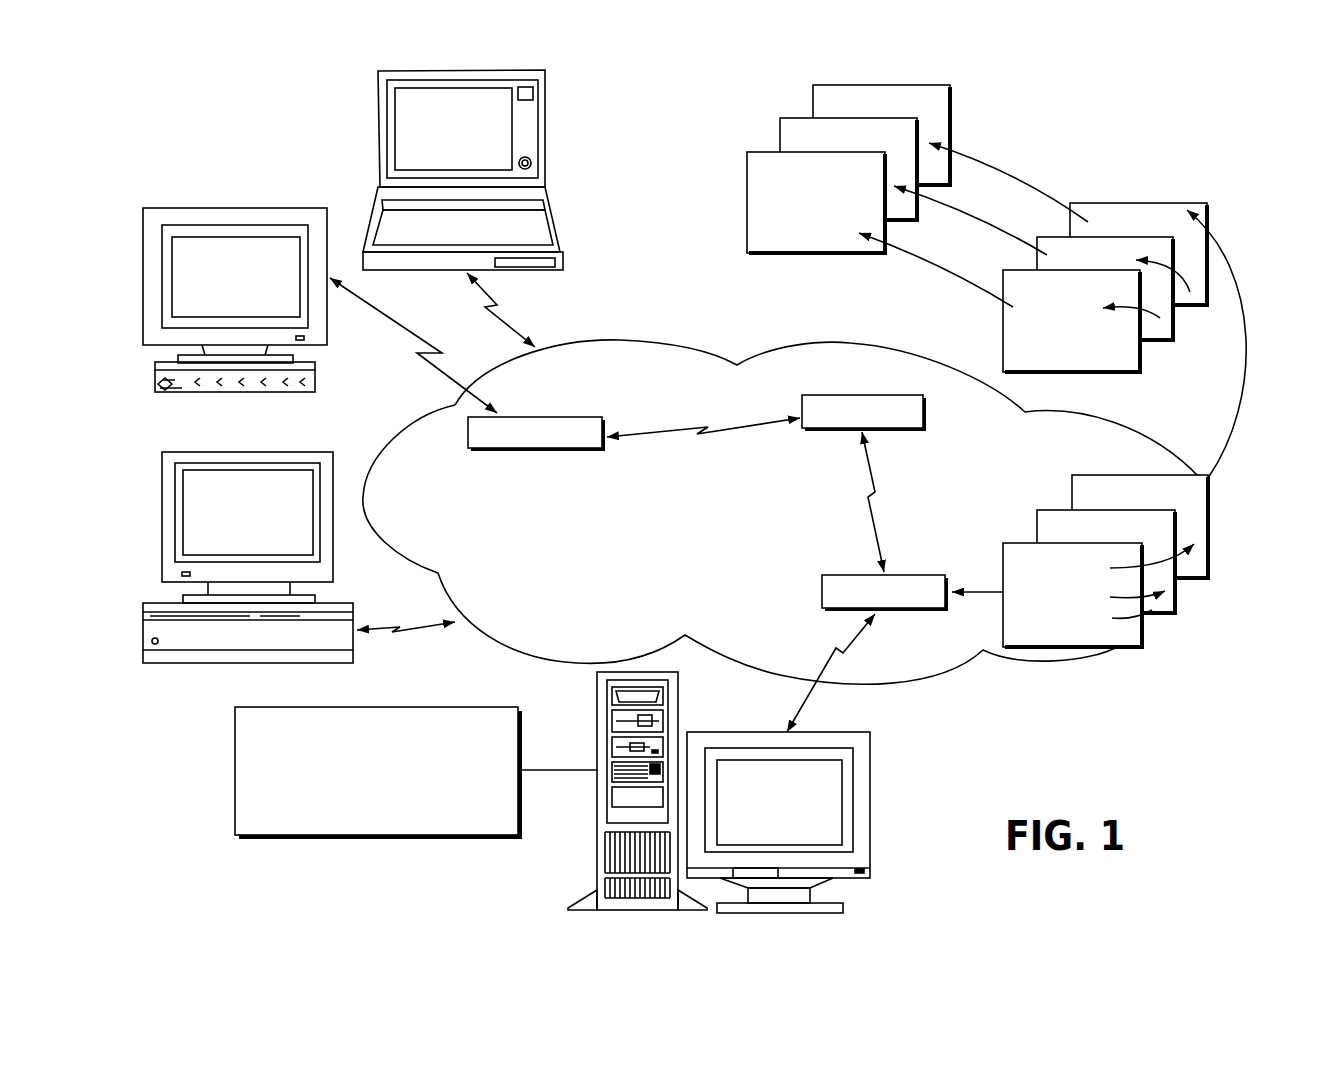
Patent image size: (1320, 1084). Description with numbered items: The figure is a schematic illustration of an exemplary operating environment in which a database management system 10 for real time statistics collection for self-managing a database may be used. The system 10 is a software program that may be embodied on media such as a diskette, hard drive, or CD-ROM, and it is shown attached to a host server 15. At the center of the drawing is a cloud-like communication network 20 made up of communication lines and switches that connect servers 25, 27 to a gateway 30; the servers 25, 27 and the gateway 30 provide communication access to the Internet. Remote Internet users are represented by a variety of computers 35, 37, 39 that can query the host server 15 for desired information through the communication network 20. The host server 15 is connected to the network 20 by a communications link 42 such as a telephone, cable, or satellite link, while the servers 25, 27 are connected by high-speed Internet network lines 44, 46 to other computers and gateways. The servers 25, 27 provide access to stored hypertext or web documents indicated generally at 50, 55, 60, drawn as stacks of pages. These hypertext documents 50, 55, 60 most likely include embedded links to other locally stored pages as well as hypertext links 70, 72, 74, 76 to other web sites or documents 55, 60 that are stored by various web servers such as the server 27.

The database management system 10 is at (235, 748).
The host server 15 is at (596, 713).
The communication network 20 is at (657, 340).
The server 25 is at (863, 573).
The server 27 is at (880, 393).
The gateway 30 is at (537, 455).
The computer 35 is at (557, 220).
The computer 37 is at (297, 207).
The computer 39 is at (297, 448).
The communications link 42 is at (802, 708).
The high-speed Internet network line 44 is at (877, 530).
The high-speed Internet network line 46 is at (692, 427).
The hypertext documents 50 is at (1215, 546).
The hypertext documents 55 is at (1219, 227).
The hypertext documents 60 is at (762, 135).
The hypertext link 70 is at (1240, 393).
The hypertext link 72 is at (1025, 185).
The hypertext link 74 is at (990, 223).
The hypertext link 76 is at (945, 267).